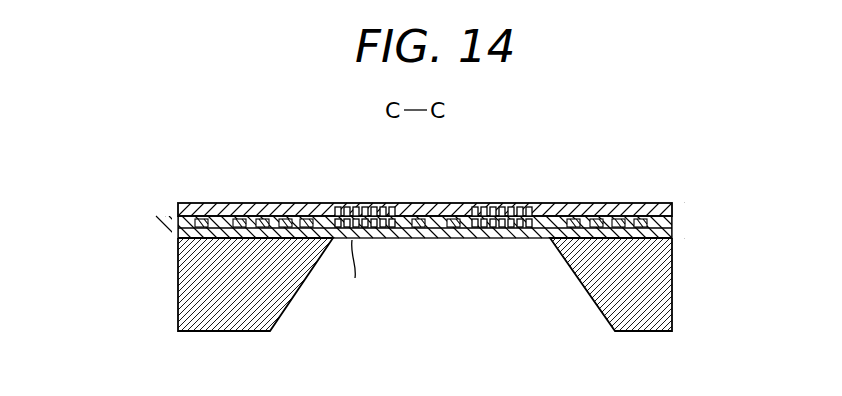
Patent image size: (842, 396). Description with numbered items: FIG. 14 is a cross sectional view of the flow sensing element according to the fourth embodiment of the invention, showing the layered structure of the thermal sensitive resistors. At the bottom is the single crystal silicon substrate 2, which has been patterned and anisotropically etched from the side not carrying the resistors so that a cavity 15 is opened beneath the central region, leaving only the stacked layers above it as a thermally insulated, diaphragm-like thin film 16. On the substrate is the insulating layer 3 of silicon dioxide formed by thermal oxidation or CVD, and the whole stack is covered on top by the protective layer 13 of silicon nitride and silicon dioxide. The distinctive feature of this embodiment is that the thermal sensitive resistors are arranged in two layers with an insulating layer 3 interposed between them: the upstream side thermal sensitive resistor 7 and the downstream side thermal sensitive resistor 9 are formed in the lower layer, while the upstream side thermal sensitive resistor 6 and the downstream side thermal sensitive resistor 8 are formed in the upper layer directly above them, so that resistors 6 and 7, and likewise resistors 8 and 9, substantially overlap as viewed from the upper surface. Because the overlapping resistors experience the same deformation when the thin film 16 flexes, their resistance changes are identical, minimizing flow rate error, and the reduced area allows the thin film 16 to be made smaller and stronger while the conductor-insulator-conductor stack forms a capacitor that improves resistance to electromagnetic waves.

The single crystal silicon substrate 2 is at (190, 300).
The insulating layer 3 is at (672, 213).
The upstream side thermal sensitive resistor 6 is at (370, 206).
The upstream side thermal sensitive resistor 7 is at (377, 240).
The downstream side thermal sensitive resistor 8 is at (500, 206).
The downstream side thermal sensitive resistor 9 is at (493, 240).
The protective layer 13 is at (642, 206).
The cavity 15 is at (313, 208).
The thin film 16 is at (220, 208).